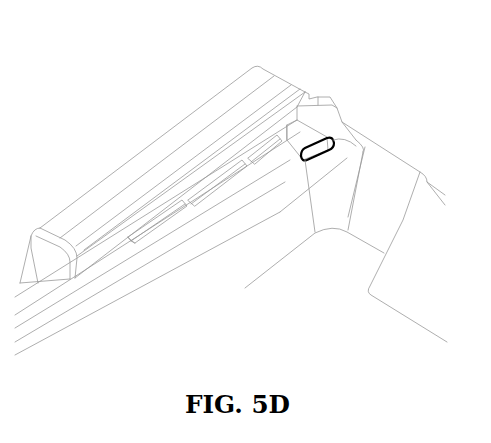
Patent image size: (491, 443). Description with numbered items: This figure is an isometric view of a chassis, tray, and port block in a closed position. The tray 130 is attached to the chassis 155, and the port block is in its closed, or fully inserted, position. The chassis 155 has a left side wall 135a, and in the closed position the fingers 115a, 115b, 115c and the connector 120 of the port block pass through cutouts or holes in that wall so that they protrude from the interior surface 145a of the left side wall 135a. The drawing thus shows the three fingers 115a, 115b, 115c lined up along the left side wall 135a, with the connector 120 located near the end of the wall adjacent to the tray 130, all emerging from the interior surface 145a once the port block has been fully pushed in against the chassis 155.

The chassis 155 is at (287, 82).
The left side wall 135a is at (307, 92).
The connector 120 is at (305, 137).
The finger 115a is at (157, 227).
The finger 115b is at (208, 192).
The finger 115c is at (262, 152).
The interior surface 145a is at (105, 260).
The tray 130 is at (346, 238).